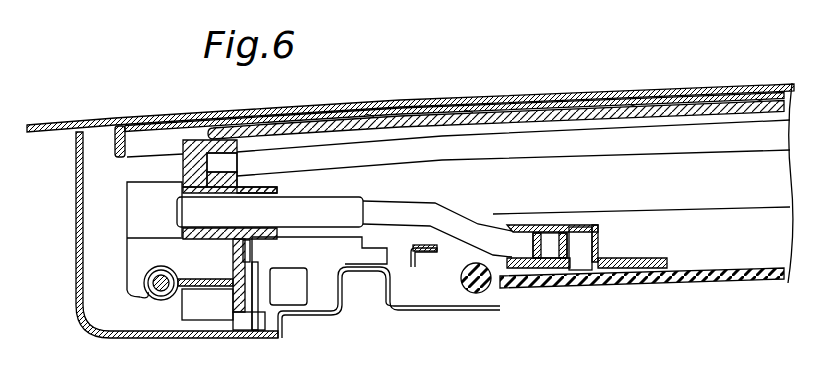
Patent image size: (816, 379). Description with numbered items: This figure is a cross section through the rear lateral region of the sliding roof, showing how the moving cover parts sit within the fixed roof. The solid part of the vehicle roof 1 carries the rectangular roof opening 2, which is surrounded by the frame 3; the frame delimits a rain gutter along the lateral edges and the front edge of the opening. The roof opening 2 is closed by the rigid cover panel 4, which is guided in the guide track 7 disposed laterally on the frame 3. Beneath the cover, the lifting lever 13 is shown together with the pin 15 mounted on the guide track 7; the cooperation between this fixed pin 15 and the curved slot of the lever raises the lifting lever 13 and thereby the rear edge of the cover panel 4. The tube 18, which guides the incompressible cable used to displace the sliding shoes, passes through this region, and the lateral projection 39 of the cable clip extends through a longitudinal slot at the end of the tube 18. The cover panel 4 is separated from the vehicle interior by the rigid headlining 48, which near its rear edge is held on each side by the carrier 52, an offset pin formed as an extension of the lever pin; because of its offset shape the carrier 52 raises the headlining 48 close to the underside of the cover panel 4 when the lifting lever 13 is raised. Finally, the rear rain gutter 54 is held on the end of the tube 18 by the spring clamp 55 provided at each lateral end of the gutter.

The solid part of the vehicle roof 1 is at (64, 123).
The roof opening 2 is at (98, 136).
The frame 3 is at (76, 262).
The cover panel 4 is at (586, 92).
The guide track 7 is at (404, 270).
The lifting lever 13 is at (234, 305).
The pin 15 is at (259, 278).
The tube 18 is at (159, 301).
The lateral projection 39 is at (197, 292).
The headlining 48 is at (656, 281).
The carrier 52 is at (472, 226).
The rear rain gutter 54 is at (680, 194).
The spring clamp 55 is at (147, 302).